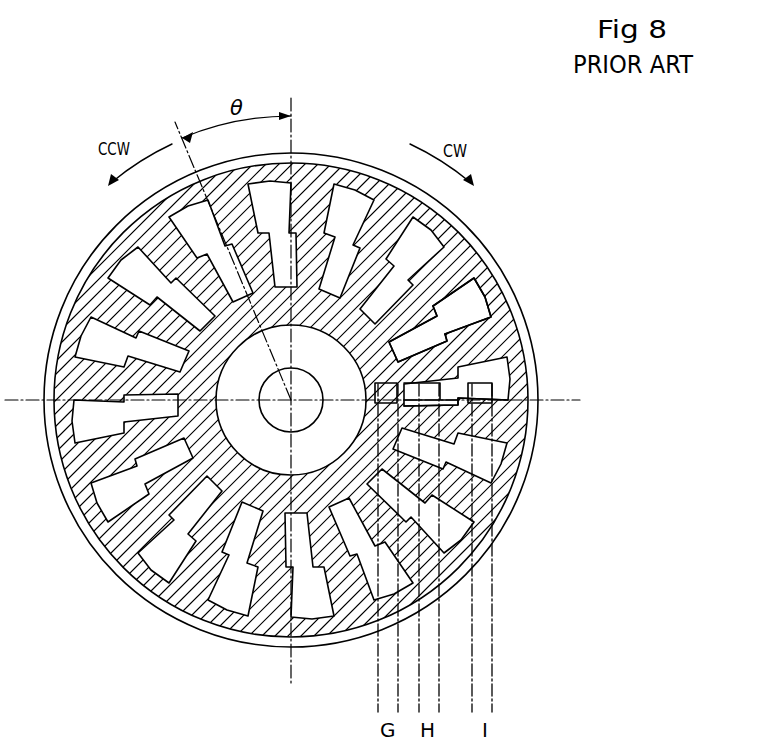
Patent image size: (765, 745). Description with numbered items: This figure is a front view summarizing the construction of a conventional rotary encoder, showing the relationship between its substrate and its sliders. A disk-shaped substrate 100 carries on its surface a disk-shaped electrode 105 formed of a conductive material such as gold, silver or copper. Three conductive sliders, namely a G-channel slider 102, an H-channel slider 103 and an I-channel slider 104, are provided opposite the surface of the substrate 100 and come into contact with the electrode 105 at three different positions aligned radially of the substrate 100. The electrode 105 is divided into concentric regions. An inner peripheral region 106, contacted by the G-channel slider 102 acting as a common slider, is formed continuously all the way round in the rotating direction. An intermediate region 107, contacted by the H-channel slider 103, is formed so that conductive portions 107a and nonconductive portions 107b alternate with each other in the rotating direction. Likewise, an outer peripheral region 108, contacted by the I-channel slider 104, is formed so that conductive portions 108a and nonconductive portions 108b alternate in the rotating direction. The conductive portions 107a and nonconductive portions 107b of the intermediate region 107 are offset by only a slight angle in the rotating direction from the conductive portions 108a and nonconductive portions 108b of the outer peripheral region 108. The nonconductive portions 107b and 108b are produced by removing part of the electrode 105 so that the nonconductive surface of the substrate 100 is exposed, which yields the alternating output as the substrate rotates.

The disk-shaped substrate 100 is at (376, 161).
The G-channel slider 102 is at (382, 667).
The H-channel slider 103 is at (428, 645).
The I-channel slider 104 is at (483, 678).
The disk-shaped electrode 105 is at (525, 352).
The inner peripheral region 106 is at (352, 352).
The intermediate region 107 is at (620, 212).
The conductive portions 107a is at (410, 330).
The nonconductive portions 107b is at (425, 357).
The outer peripheral region 108 is at (622, 360).
The conductive portions 108a is at (503, 422).
The nonconductive portions 108b is at (498, 374).